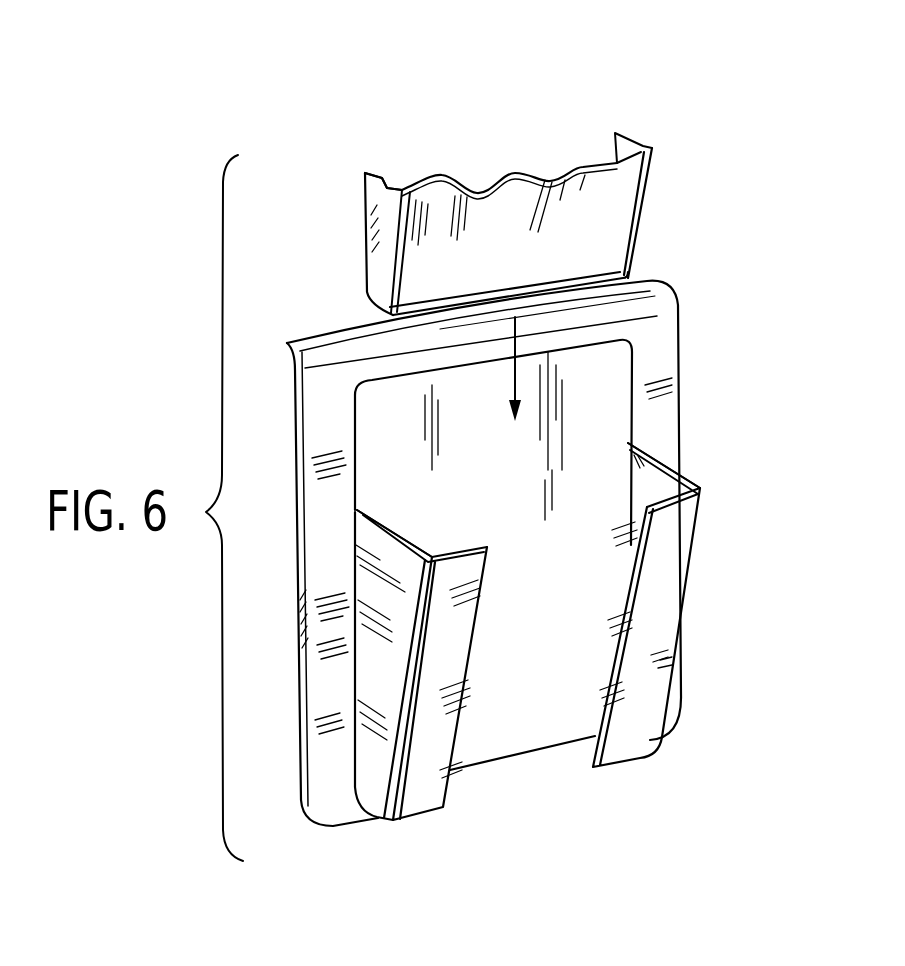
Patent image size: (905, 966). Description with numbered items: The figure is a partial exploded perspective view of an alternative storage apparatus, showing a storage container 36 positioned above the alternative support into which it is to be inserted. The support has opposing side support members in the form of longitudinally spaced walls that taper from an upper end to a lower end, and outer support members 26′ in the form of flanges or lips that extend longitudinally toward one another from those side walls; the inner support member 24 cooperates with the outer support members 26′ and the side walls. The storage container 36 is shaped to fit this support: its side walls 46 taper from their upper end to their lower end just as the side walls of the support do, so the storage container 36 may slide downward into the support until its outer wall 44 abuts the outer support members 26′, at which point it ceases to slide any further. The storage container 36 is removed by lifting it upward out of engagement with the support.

The inner support member 24 is at (573, 673).
The outer support members 26′ is at (460, 566).
The storage container 36 is at (617, 198).
The outer wall 44 is at (607, 248).
The side walls 46 is at (633, 137).